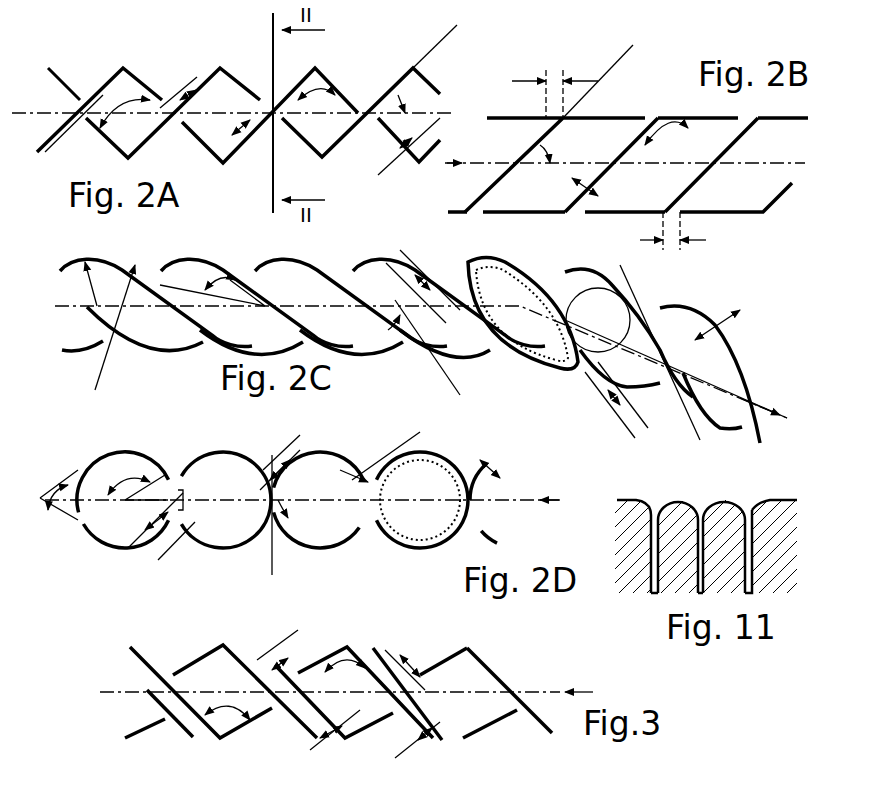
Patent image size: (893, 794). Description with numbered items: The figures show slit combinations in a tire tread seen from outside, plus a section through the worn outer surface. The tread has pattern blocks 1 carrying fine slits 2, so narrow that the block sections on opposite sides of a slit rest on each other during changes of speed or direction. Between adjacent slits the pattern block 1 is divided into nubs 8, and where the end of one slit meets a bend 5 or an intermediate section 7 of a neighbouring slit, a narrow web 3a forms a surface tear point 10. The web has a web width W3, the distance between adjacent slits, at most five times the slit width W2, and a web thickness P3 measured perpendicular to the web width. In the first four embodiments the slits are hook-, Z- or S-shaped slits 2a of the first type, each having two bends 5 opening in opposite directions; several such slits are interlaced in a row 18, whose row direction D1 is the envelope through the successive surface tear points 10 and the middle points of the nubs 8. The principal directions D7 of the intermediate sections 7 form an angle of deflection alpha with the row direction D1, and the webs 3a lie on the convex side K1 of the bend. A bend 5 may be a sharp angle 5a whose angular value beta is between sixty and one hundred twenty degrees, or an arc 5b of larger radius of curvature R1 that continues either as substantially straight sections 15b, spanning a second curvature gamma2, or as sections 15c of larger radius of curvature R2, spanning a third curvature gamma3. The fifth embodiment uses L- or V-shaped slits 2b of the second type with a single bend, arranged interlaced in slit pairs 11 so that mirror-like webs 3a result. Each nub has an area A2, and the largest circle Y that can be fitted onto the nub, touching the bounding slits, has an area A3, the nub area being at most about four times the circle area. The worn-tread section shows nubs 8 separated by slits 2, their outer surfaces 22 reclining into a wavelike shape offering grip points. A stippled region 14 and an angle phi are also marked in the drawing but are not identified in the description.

In FIG. 11, the pattern block 1 is at (628, 553).
In FIG. 11, the slit 2 is at (748, 594).
In FIG. 2A, the slit of the first type 2a is at (358, 112).
In FIG. 2B, the slit of the first type 2a is at (550, 215).
In FIG. 2C, the slit of the first type 2a is at (530, 368).
In FIG. 2D, the slit of the first type 2a is at (335, 545).
In FIG. 3, the slit of the second type 2b is at (225, 740).
In FIG. 2A, the web of the first type 3a is at (118, 70).
In FIG. 2B, the web of the first type 3a is at (655, 118).
In FIG. 2C, the web of the first type 3a is at (140, 280).
In FIG. 2D, the web of the first type 3a is at (170, 478).
In FIG. 3, the web of the first type 3a is at (172, 672).
In FIG. 2A, the bend 5 is at (128, 158).
In FIG. 2B, the bend 5 is at (560, 212).
In FIG. 2C, the bend 5 is at (168, 352).
In FIG. 2A, the angle 5a is at (220, 68).
In FIG. 2B, the angle 5a is at (655, 116).
In FIG. 3, the angle 5a is at (347, 647).
In FIG. 2C, the arc 5b is at (288, 266).
In FIG. 2D, the arc 5b is at (125, 452).
In FIG. 2A, the intermediate section 7 is at (172, 120).
In FIG. 2B, the intermediate section 7 is at (740, 128).
In FIG. 2C, the intermediate section 7 is at (372, 307).
In FIG. 2D, the intermediate section 7 is at (470, 505).
In FIG. 2A, the nub 8 is at (331, 112).
In FIG. 2B, the nub 8 is at (688, 191).
In FIG. 2C, the nub 8 is at (446, 340).
In FIG. 2D, the nub 8 is at (418, 518).
In FIG. 11, the nub 8 is at (701, 546).
In FIG. 3, the nub 8 is at (345, 691).
In FIG. 2A, the surface tear point 10 is at (262, 105).
In FIG. 2C, the surface tear point 10 is at (650, 310).
In FIG. 2D, the surface tear point 10 is at (80, 525).
In FIG. 3, the surface tear point 10 is at (168, 725).
In FIG. 3, the slit pair 11 is at (395, 640).
In FIG. 2C, the insert / filling 14 is at (570, 370).
In FIG. 2D, the insert / filling 14 is at (425, 548).
In FIG. 11, the insert / filling 14 is at (748, 500).
In FIG. 2D, the substantially straight section 15b is at (207, 498).
In FIG. 2C, the section with larger radius of curvature 15c is at (320, 318).
In FIG. 2A, the row 18 is at (452, 113).
In FIG. 2C, the row 18 is at (777, 433).
In FIG. 2D, the row 18 is at (555, 500).
In FIG. 3, the row 18 is at (587, 681).
In FIG. 11, the outer surface 22 is at (755, 498).
In FIG. 2A, the row direction D1 is at (48, 113).
In FIG. 2B, the row direction D1 is at (500, 163).
In FIG. 2C, the row direction D1 is at (720, 372).
In FIG. 2D, the row direction D1 is at (510, 500).
In FIG. 2A, the principal direction of intermediate section D7 is at (435, 45).
In FIG. 2B, the principal direction of intermediate section D7 is at (598, 69).
In FIG. 2C, the principal direction of intermediate section D7 is at (675, 450).
In FIG. 2D, the principal direction of intermediate section D7 is at (287, 522).
In FIG. 2A, the web thickness P3 is at (74, 136).
In FIG. 2D, the web thickness P3 is at (380, 451).
In FIG. 3, the web thickness P3 is at (405, 665).
In FIG. 2A, the web width W3 is at (182, 82).
In FIG. 2B, the web width W3 is at (628, 153).
In FIG. 2C, the web width W3 is at (511, 336).
In FIG. 2D, the web width W3 is at (214, 505).
In FIG. 3, the web width W3 is at (346, 693).
In FIG. 2A, the slit width W2 is at (409, 154).
In FIG. 2B, the slit width W2 is at (606, 190).
In FIG. 2C, the slit width W2 is at (735, 325).
In FIG. 2D, the slit width W2 is at (477, 452).
In FIG. 3, the slit width W2 is at (315, 742).
In FIG. 2B, the convex side of the bend K1 is at (755, 115).
In FIG. 2C, the convex side of the bend K1 is at (247, 275).
In FIG. 2C, the radius of curvature of the arc R1 is at (76, 284).
In FIG. 2C, the radius of curvature of continuing sections R2 is at (124, 327).
In FIG. 2C, the area of the nub A2 is at (631, 363).
In FIG. 2D, the area of the nub A2 is at (108, 518).
In FIG. 2C, the area of the circle A3 is at (598, 320).
In FIG. 2C, the circle Y is at (580, 290).
In FIG. 2A, the angle of deflection alpha is at (412, 100).
In FIG. 2B, the angle of deflection alpha is at (554, 148).
In FIG. 2C, the angle of deflection alpha is at (403, 323).
In FIG. 2D, the angle of deflection alpha is at (290, 517).
In FIG. 2A, the angular value of the angle beta is at (217, 108).
In FIG. 2B, the angular value of the angle beta is at (670, 139).
In FIG. 3, the angular value of the angle beta is at (277, 690).
In FIG. 2D, the second curvature gamma2 is at (134, 474).
In FIG. 2C, the third curvature gamma3 is at (212, 288).
In FIG. 2D, the angle phi is at (59, 488).